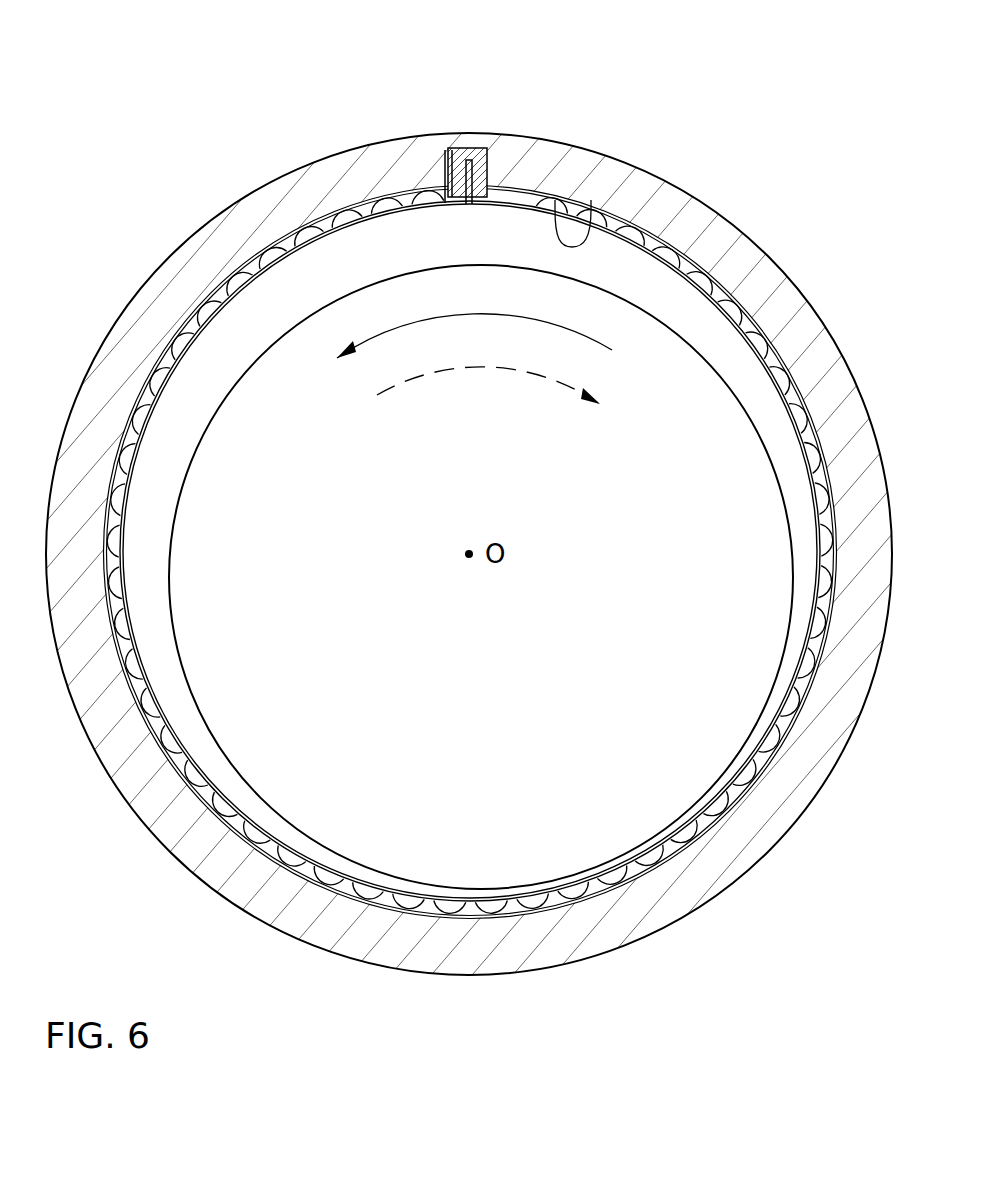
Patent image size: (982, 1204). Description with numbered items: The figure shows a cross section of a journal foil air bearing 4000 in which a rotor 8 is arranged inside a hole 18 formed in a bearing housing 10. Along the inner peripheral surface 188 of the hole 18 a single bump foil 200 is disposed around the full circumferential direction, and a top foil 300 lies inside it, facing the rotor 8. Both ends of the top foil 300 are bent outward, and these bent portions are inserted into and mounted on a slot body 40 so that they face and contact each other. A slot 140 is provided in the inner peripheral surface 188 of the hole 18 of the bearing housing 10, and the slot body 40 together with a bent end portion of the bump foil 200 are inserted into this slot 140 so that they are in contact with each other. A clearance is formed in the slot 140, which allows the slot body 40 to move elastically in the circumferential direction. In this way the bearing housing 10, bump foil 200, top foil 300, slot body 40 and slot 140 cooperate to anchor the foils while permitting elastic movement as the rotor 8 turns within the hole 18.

The rotating device 4000 is at (147, 100).
The bearing housing 10 is at (344, 172).
The rotor 8 is at (362, 830).
The bump foil 200 is at (727, 312).
The top foil 300 is at (317, 236).
The slot body 40 is at (478, 152).
The slot 140 is at (448, 153).
The hole 18 is at (523, 234).
The inner peripheral surface 188 is at (591, 205).